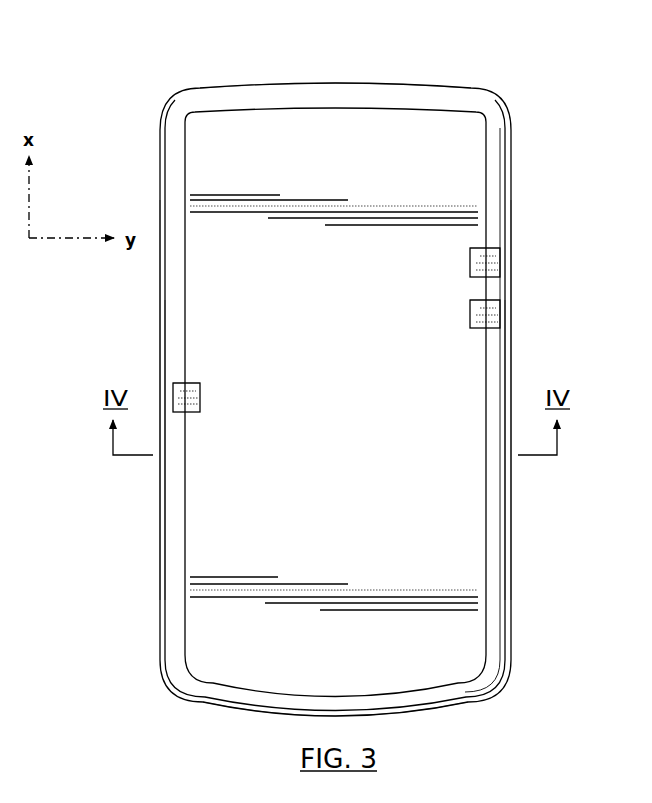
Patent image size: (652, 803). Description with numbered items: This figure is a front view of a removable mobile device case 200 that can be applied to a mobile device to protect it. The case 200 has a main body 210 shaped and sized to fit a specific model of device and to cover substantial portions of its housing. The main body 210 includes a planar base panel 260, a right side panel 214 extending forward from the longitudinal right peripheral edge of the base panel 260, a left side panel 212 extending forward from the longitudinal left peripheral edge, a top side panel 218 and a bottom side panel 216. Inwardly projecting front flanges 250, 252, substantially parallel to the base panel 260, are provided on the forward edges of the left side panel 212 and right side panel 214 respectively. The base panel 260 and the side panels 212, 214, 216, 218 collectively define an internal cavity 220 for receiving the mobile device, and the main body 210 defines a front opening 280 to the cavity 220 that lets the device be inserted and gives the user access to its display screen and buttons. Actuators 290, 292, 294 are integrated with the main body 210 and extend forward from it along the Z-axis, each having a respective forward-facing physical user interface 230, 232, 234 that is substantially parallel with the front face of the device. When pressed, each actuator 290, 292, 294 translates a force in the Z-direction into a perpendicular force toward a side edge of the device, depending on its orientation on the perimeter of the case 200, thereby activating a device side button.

The mobile device case 200 is at (520, 115).
The main body 210 is at (509, 200).
The left side panel 212 is at (158, 558).
The right side panel 214 is at (514, 357).
The bottom side panel 216 is at (444, 711).
The top side panel 218 is at (253, 83).
The internal cavity 220 is at (210, 140).
The physical user interface 230 is at (202, 400).
The physical user interface 232 is at (469, 258).
The physical user interface 234 is at (469, 310).
The front flange 250 is at (172, 495).
The front flange 252 is at (494, 524).
The base panel 260 is at (352, 565).
The front opening 280 is at (390, 185).
The actuator 290 is at (175, 385).
The actuator 292 is at (500, 268).
The actuator 294 is at (500, 320).